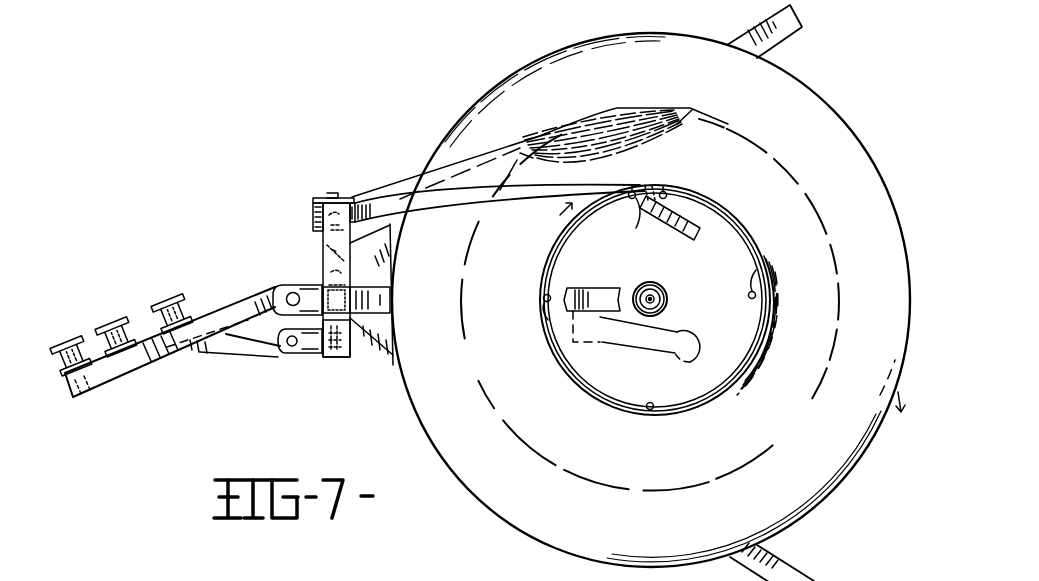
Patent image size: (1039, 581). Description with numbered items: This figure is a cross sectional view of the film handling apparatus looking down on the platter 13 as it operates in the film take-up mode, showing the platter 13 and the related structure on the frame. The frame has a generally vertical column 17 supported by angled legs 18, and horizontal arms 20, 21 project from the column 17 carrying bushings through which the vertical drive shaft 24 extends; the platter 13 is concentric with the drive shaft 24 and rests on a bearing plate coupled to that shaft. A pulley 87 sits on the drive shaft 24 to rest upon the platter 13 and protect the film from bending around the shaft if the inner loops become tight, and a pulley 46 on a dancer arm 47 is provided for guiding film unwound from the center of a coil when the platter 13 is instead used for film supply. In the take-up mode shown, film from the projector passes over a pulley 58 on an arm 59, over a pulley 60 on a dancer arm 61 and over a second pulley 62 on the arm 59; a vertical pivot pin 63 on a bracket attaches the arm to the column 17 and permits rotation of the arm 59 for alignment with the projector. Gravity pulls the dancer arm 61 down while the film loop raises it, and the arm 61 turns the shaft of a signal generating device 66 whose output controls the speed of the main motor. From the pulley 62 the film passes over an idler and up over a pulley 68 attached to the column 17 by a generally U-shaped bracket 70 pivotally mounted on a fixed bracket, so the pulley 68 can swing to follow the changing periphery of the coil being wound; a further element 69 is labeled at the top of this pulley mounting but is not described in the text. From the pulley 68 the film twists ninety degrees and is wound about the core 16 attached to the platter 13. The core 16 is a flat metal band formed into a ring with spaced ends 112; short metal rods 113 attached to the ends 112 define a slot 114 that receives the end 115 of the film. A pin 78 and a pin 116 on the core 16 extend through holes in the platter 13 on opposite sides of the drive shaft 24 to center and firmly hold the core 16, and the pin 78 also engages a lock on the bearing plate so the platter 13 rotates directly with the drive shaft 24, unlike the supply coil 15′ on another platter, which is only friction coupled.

The platter 13 is at (425, 433).
The coil 15′ is at (493, 203).
The core 16 is at (703, 398).
The column 17 is at (321, 276).
The angled legs 18 is at (757, 52).
The arm 20 is at (600, 266).
The arm 21 is at (385, 289).
The drive shaft 24 is at (659, 285).
The pulley 46 is at (683, 360).
The dancer arm 47 is at (650, 343).
The pulley 58 is at (82, 340).
The arm 59 is at (146, 376).
The pulley 60 is at (176, 298).
The dancer arm 61 is at (262, 340).
The pulley 62 is at (121, 320).
The vertical pivot pin 63 is at (276, 292).
The signal generating device 66 is at (331, 358).
The pulley 68 is at (355, 248).
The cap 69 is at (357, 170).
The bracket 70 is at (316, 230).
The pin 78 is at (755, 290).
The pulley 87 is at (668, 297).
The spaced ends 112 is at (636, 192).
The metal rods 113 is at (640, 214).
The slot 114 is at (653, 192).
The end of the film 115 is at (680, 233).
The pin 116 is at (545, 319).